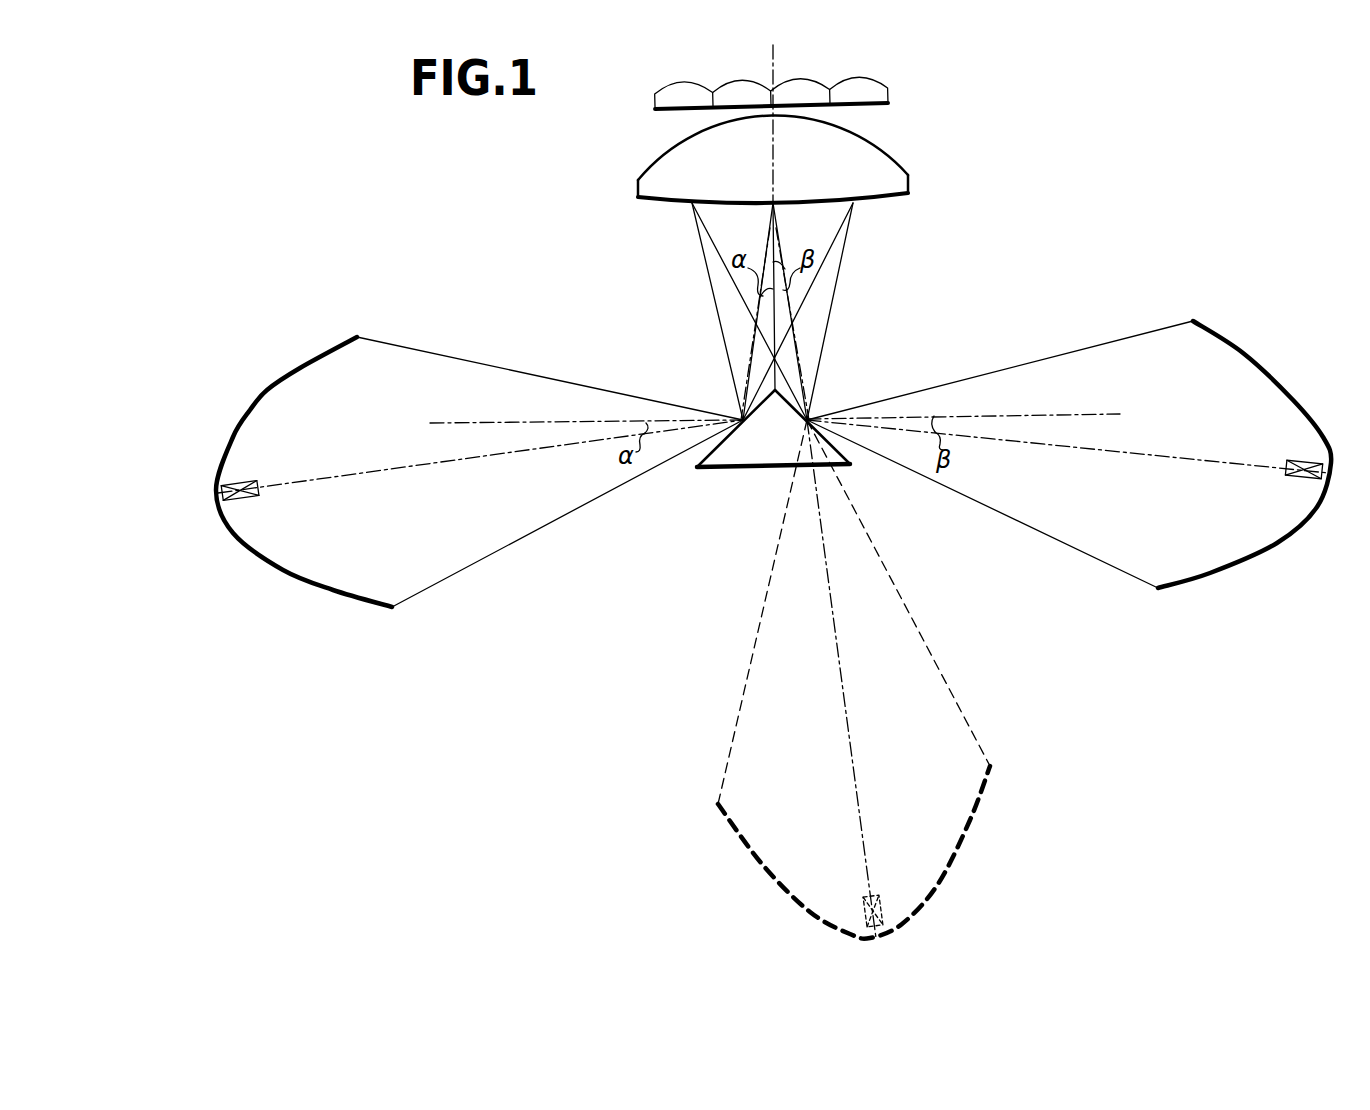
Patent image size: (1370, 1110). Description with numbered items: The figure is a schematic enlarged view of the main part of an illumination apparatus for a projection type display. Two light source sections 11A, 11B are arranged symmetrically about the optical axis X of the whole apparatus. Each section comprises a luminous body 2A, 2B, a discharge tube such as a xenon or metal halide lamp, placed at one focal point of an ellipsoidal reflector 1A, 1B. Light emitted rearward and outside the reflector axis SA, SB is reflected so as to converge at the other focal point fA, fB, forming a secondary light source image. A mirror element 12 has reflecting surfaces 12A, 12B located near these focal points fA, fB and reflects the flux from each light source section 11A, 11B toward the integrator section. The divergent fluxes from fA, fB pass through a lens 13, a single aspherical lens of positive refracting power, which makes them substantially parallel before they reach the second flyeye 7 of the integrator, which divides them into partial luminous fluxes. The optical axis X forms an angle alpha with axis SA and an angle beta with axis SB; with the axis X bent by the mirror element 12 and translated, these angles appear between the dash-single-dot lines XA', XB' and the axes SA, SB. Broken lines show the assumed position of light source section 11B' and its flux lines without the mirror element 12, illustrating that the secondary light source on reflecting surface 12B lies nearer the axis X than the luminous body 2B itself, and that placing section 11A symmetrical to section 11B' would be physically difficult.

The reflector 1A is at (305, 375).
The reflector 1B is at (1250, 352).
The luminous body 2A is at (248, 482).
The luminous body 2B is at (1292, 461).
The second flyeye 7 is at (878, 93).
The light source section 11A is at (405, 328).
The light source section 11B is at (1000, 420).
The light source section 11B' is at (892, 679).
The mirror element 12 is at (782, 456).
The reflecting surface 12A is at (695, 467).
The reflecting surface 12B is at (852, 464).
The lens 13 is at (880, 172).
The optical axis X is at (778, 62).
The translated bent optical axis XA' is at (574, 400).
The translated bent optical axis XB' is at (971, 390).
The optical axis of reflector SA is at (355, 480).
The optical axis of reflector SB is at (1133, 452).
The focal point fA is at (742, 414).
The focal point fB is at (810, 414).